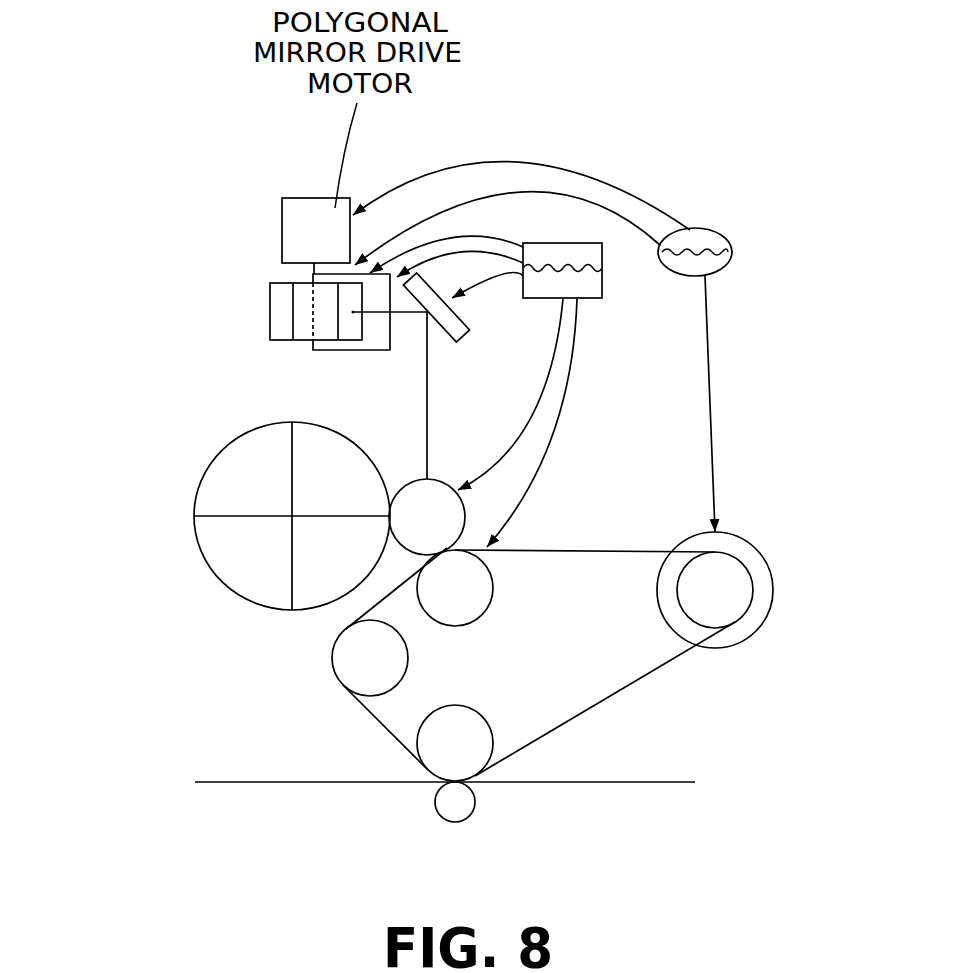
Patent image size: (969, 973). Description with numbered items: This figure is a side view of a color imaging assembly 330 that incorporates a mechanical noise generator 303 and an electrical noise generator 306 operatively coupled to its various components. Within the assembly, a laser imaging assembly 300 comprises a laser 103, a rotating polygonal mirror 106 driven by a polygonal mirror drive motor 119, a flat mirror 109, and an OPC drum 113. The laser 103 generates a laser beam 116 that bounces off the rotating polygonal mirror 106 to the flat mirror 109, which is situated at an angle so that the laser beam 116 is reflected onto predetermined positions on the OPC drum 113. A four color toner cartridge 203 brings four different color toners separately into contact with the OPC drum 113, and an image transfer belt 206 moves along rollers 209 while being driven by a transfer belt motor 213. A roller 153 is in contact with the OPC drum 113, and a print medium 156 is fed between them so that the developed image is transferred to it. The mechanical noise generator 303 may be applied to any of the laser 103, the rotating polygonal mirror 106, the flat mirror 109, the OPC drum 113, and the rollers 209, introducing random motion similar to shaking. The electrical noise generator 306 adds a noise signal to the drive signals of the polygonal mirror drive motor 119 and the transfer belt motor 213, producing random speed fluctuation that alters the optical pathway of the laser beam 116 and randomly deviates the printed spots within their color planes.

The laser 103 is at (318, 350).
The rotating polygonal mirror 106 is at (268, 310).
The flat mirror 109 is at (470, 311).
The OPC drum 113 is at (413, 478).
The laser beam 116 is at (432, 445).
The polygonal mirror drive motor 119 is at (315, 195).
The roller 153 is at (460, 820).
The print medium 156 is at (625, 785).
The four color toner cartridge 203 is at (193, 495).
The image transfer belt 206 is at (642, 679).
The rollers 209 is at (687, 617).
The transfer belt motor 213 is at (775, 595).
The laser imaging assembly 300 is at (153, 297).
The mechanical noise generator 303 is at (605, 280).
The electrical noise generator 306 is at (738, 253).
The color imaging assembly 330 is at (702, 120).